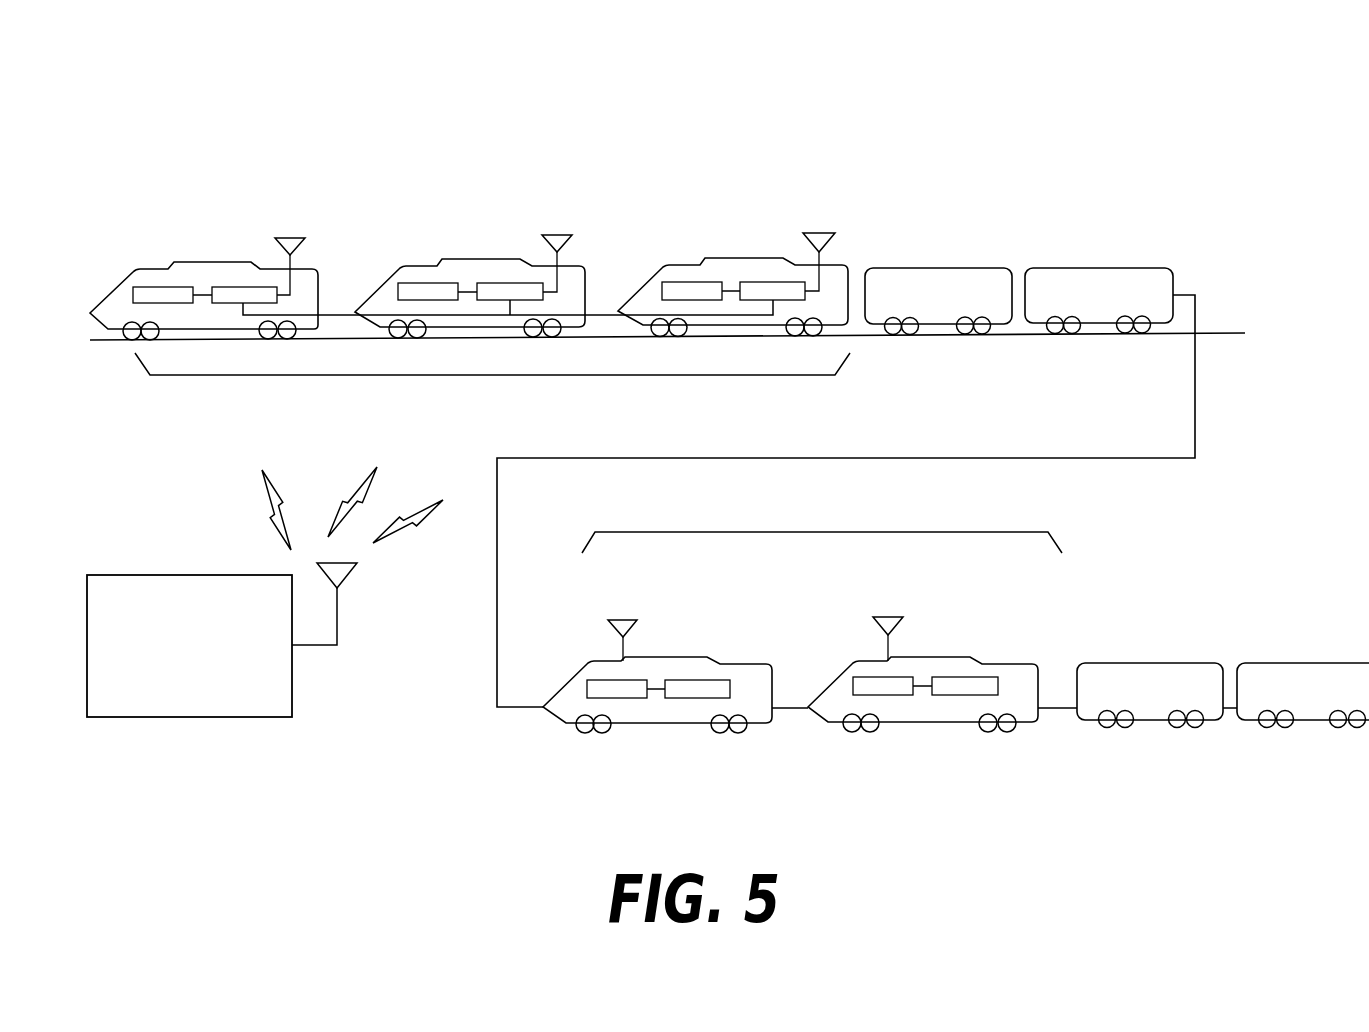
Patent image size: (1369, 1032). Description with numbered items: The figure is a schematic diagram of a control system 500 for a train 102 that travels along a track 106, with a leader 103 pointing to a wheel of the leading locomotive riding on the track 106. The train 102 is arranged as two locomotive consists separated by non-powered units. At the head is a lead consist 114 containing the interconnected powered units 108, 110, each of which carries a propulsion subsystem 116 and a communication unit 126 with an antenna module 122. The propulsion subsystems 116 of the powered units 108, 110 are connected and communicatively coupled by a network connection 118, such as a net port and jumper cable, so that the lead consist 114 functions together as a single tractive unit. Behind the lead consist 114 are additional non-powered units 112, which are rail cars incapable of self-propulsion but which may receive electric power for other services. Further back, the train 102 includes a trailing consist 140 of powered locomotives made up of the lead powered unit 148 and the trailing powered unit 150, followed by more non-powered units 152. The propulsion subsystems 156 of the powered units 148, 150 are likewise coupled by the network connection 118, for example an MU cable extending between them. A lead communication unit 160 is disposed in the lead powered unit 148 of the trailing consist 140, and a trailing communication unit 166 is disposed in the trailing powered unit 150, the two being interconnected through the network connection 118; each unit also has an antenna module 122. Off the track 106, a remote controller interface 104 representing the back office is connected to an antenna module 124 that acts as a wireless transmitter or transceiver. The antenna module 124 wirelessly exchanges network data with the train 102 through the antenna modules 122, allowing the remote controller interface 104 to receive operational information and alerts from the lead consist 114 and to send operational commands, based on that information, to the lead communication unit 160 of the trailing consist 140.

The vehicle control system 500 is at (688, 49).
The train 102 is at (1183, 242).
The wheel 103 is at (132, 334).
The off-board remote controller interface 104 is at (292, 683).
The track 106 is at (1223, 334).
The lead powered unit 108 is at (200, 301).
The powered unit 110 is at (473, 260).
The non-powered unit 112 is at (945, 268).
The lead consist 114 is at (492, 377).
The propulsion subsystem 116 is at (157, 287).
The network connection 118 is at (343, 315).
The antenna module 122 is at (290, 238).
The antenna module 124 is at (347, 575).
The communication unit 126 is at (243, 287).
The trailing consist 140 is at (808, 532).
The lead powered unit of trailing consist 148 is at (660, 660).
The trailing powered unit 150 is at (928, 657).
The non-powered unit 152 is at (1157, 663).
The propulsion subsystem 156 is at (592, 693).
The lead communication unit 160 is at (700, 680).
The trailing communication unit 166 is at (965, 677).